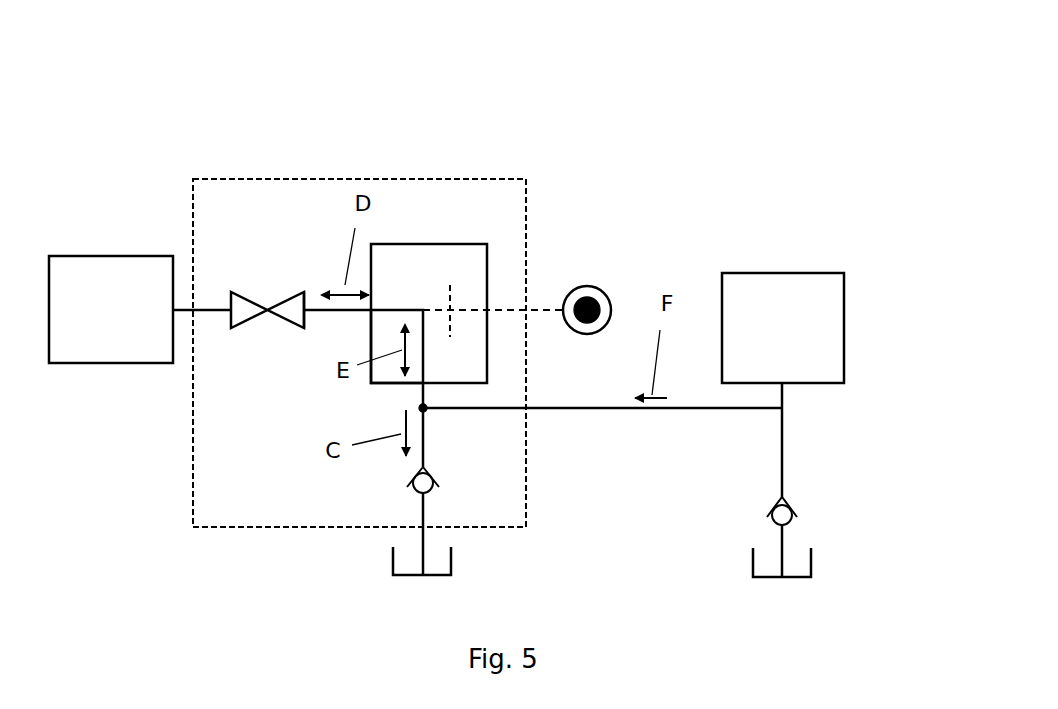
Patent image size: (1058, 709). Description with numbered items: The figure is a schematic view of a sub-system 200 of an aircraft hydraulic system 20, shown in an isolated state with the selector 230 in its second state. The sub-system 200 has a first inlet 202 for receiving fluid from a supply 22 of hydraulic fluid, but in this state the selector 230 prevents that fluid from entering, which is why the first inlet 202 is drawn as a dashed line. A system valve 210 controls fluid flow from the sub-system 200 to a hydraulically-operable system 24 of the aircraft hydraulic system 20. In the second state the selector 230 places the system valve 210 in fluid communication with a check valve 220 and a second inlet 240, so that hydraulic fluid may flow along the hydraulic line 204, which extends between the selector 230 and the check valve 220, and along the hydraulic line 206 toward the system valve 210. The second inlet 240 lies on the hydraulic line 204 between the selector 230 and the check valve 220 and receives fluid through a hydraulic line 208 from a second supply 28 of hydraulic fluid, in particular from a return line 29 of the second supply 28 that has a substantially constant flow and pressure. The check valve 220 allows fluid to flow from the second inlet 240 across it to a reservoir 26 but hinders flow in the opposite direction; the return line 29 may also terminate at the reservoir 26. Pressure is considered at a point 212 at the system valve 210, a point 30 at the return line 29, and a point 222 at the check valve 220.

The aircraft hydraulic system 20 is at (257, 123).
The sub-system 200 is at (207, 178).
The hydraulically-operable system 24 is at (73, 255).
The hydraulic line 206 is at (323, 313).
The system valve 210 is at (282, 300).
The point 212 is at (305, 288).
The selector 230 is at (415, 242).
The hydraulic line 204 is at (423, 352).
The first inlet 202 is at (500, 310).
The supply of hydraulic fluid 22 is at (612, 302).
The second inlet 240 is at (420, 392).
The hydraulic line 208 is at (502, 408).
The point 30 is at (742, 408).
The point 222 is at (425, 458).
The check valve 220 is at (410, 483).
The second supply of hydraulic fluid 28 is at (817, 272).
The return line 29 is at (784, 400).
The reservoir 26 is at (453, 557).